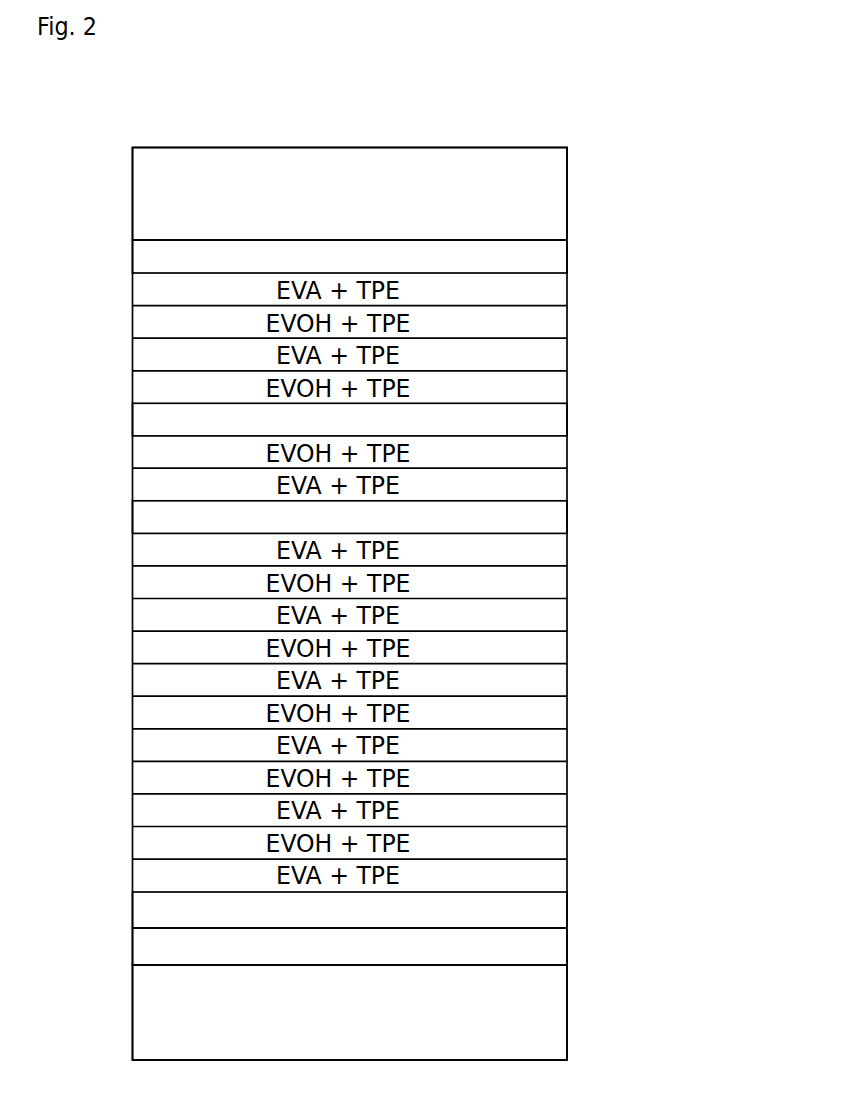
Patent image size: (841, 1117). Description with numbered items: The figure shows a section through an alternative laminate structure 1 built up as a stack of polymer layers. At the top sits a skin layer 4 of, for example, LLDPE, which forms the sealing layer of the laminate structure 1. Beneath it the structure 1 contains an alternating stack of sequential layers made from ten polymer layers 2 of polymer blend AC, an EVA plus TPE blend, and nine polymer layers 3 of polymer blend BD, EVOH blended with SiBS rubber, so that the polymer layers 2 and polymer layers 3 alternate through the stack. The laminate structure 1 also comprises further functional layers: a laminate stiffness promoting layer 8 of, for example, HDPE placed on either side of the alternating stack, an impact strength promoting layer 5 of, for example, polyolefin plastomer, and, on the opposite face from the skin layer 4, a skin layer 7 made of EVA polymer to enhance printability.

The laminate structure 1 is at (122, 139).
The polymer layer 2 is at (567, 415).
The polymer layer 3 is at (567, 509).
The skin layer 4 is at (567, 172).
The impact strength promoting layer 5 is at (563, 960).
The skin layer 7 is at (567, 1035).
The laminate stiffness promoting layer 8 is at (567, 257).